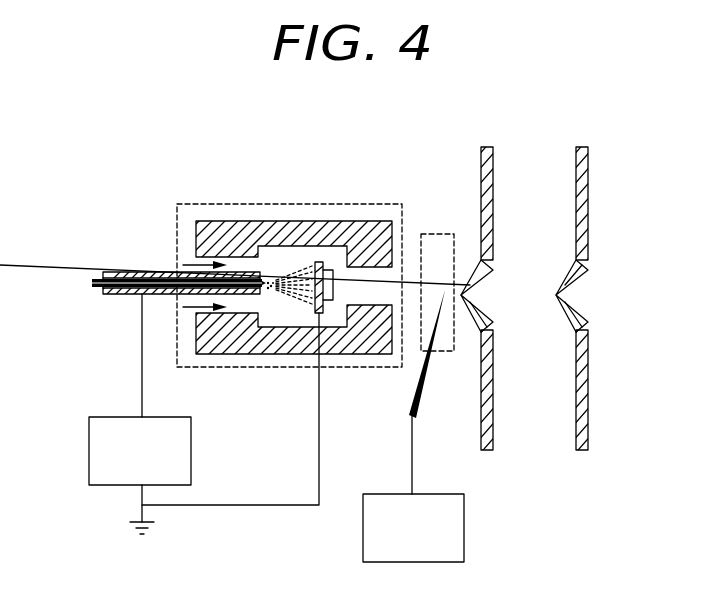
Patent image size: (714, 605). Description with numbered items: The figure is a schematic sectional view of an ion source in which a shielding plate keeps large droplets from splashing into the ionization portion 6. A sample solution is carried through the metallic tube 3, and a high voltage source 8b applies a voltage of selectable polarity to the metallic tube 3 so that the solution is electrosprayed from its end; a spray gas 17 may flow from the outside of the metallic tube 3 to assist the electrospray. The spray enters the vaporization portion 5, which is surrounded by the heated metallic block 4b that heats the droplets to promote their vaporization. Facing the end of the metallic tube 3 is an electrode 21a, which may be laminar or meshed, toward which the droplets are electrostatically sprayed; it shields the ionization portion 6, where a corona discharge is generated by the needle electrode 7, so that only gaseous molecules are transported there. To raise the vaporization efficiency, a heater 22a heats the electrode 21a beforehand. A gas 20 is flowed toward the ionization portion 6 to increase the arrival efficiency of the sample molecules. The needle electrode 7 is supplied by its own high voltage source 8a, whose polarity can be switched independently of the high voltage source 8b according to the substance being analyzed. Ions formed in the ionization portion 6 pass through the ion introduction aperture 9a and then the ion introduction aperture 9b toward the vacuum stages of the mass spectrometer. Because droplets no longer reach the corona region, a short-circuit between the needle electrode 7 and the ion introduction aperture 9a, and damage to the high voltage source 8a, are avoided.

The metallic tube 3 is at (98, 295).
The heated metallic block 4b is at (217, 226).
The vaporization portion 5 is at (275, 214).
The ionization portion 6 is at (433, 238).
The needle electrode 7 is at (407, 400).
The high voltage source 8a is at (464, 548).
The high voltage source 8b is at (89, 470).
The ion introduction aperture 9a is at (461, 298).
The ion introduction aperture 9b is at (556, 298).
The spray gas 17 is at (113, 272).
The gas 20 is at (190, 264).
The electrode 21a is at (320, 262).
The heater 22a is at (334, 270).